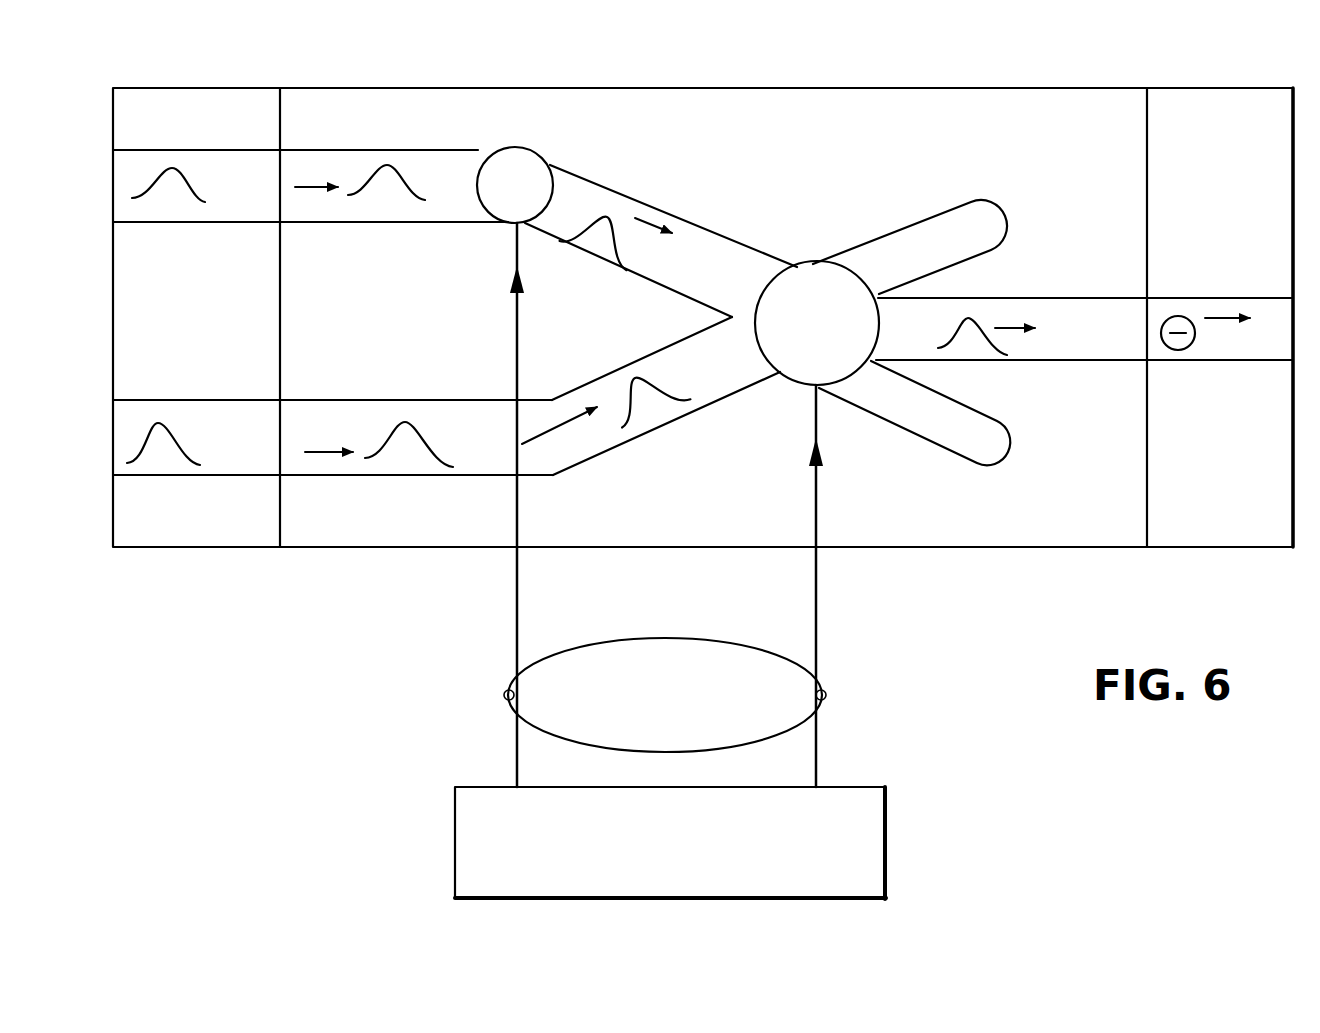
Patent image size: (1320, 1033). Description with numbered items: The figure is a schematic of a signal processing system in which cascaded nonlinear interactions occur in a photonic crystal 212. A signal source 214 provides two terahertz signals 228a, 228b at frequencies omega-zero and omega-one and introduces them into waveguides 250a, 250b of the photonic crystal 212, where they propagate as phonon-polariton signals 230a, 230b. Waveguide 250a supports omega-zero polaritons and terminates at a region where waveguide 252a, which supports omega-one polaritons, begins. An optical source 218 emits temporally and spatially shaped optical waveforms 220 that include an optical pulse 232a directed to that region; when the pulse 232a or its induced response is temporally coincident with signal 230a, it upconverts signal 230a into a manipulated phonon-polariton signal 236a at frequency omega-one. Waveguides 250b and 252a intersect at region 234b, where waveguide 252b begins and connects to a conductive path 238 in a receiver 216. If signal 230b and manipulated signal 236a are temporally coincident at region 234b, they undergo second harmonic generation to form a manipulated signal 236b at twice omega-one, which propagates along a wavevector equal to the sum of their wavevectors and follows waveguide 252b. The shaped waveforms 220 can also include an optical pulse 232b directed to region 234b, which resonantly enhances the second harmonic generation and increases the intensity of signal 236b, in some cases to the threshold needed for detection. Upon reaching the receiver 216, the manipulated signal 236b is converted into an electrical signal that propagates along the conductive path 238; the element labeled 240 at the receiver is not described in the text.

The photonic crystal 212 is at (1108, 523).
The signal source 214 is at (165, 530).
The receiver 216 is at (1215, 517).
The optical source 218 is at (888, 830).
The temporally and spatially shaped optical waveforms 220 is at (824, 694).
The terahertz signal 228a is at (168, 188).
The terahertz signal 228b is at (158, 423).
The phonon-polariton signal 230a is at (388, 164).
The phonon-polariton signal 230b is at (405, 422).
The optical pulse 232a is at (516, 611).
The optical pulse 232b is at (817, 600).
The region 234b is at (514, 153).
The manipulated phonon-polariton signal 236a is at (607, 217).
The manipulated signal 236b is at (978, 320).
The conductive path 238 is at (1260, 343).
The detector 240 is at (1178, 320).
The waveguide 250a is at (312, 170).
The waveguide 250b is at (323, 437).
The waveguide 252a is at (728, 277).
The waveguide 252b is at (1105, 337).